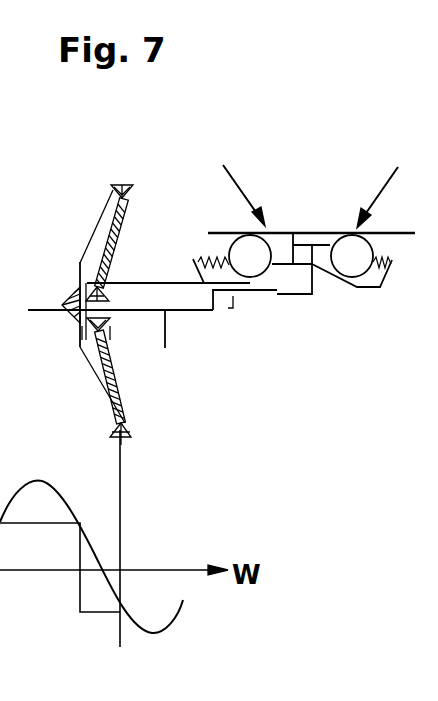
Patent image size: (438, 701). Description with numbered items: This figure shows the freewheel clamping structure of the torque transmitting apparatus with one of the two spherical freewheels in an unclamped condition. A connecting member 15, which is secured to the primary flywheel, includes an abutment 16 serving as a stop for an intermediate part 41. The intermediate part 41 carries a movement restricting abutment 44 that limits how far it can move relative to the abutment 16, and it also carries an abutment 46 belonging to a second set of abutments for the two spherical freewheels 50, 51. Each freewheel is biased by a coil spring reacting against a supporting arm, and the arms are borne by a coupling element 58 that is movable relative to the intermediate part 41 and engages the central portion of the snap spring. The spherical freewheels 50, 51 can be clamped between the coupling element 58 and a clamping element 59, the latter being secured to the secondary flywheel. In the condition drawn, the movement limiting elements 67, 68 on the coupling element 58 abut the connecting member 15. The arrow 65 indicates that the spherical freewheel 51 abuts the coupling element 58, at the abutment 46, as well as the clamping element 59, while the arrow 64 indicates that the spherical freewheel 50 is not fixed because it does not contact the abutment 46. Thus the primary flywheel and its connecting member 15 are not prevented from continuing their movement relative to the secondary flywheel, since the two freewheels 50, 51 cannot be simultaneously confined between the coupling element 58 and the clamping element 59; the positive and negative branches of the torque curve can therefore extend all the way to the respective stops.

The connecting member 15 is at (55, 310).
The abutment 16 is at (230, 307).
The intermediate part 41 is at (305, 297).
The movement restricting abutment 44 is at (238, 297).
The abutment 46 is at (278, 236).
The spherical freewheel 50 is at (252, 260).
The spherical freewheel 51 is at (355, 258).
The coupling element 58 is at (166, 283).
The clamping element 59 is at (404, 233).
The arrow 64 is at (262, 224).
The arrow 65 is at (360, 224).
The movement limiting element 67 is at (82, 292).
The movement limiting element 68 is at (86, 322).